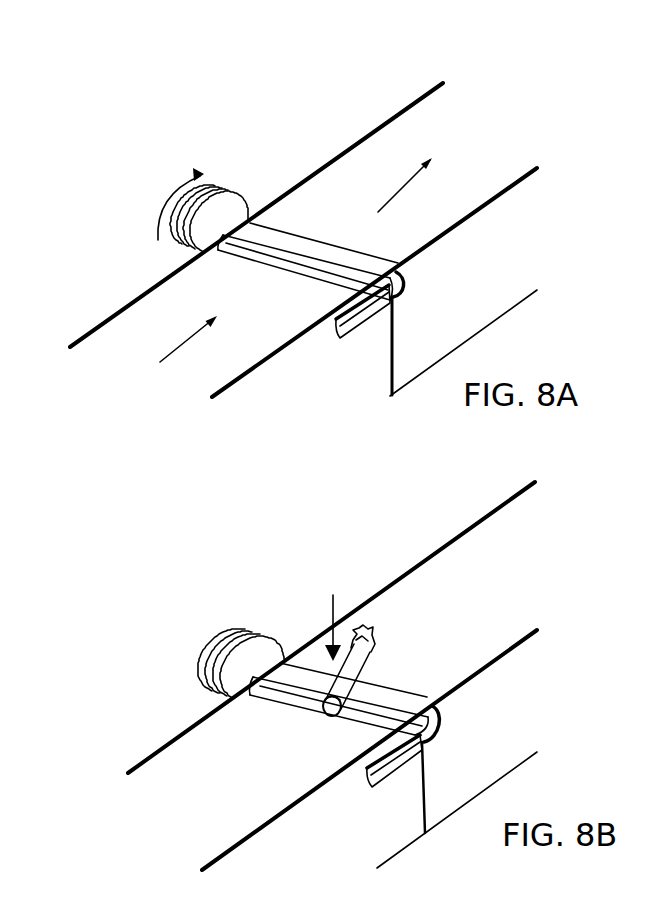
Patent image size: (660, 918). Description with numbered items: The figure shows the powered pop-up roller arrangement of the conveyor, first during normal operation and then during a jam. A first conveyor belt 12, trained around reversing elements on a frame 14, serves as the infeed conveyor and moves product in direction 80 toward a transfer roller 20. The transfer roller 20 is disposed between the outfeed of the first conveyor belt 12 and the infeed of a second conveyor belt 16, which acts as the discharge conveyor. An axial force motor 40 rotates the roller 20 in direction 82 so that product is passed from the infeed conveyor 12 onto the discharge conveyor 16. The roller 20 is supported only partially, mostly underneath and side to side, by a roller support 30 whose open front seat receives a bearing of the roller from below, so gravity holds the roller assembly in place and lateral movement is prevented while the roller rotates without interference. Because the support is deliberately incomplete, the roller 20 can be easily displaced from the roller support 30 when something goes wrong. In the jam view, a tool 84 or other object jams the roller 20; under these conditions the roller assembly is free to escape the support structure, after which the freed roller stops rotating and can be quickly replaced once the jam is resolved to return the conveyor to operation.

In FIG. 8A, the first conveyor belt 12 is at (128, 342).
In FIG. 8A, the frame 14 is at (283, 349).
In FIG. 8A, the second conveyor belt 16 is at (350, 178).
In FIG. 8A, the transfer roller 20 is at (277, 258).
In FIG. 8A, the roller support 30 is at (352, 341).
In FIG. 8A, the axial force motor 40 is at (218, 186).
In FIG. 8A, the direction 80 is at (187, 337).
In FIG. 8A, the direction 82 is at (170, 203).
In FIG. 8B, the tool 84 is at (373, 656).